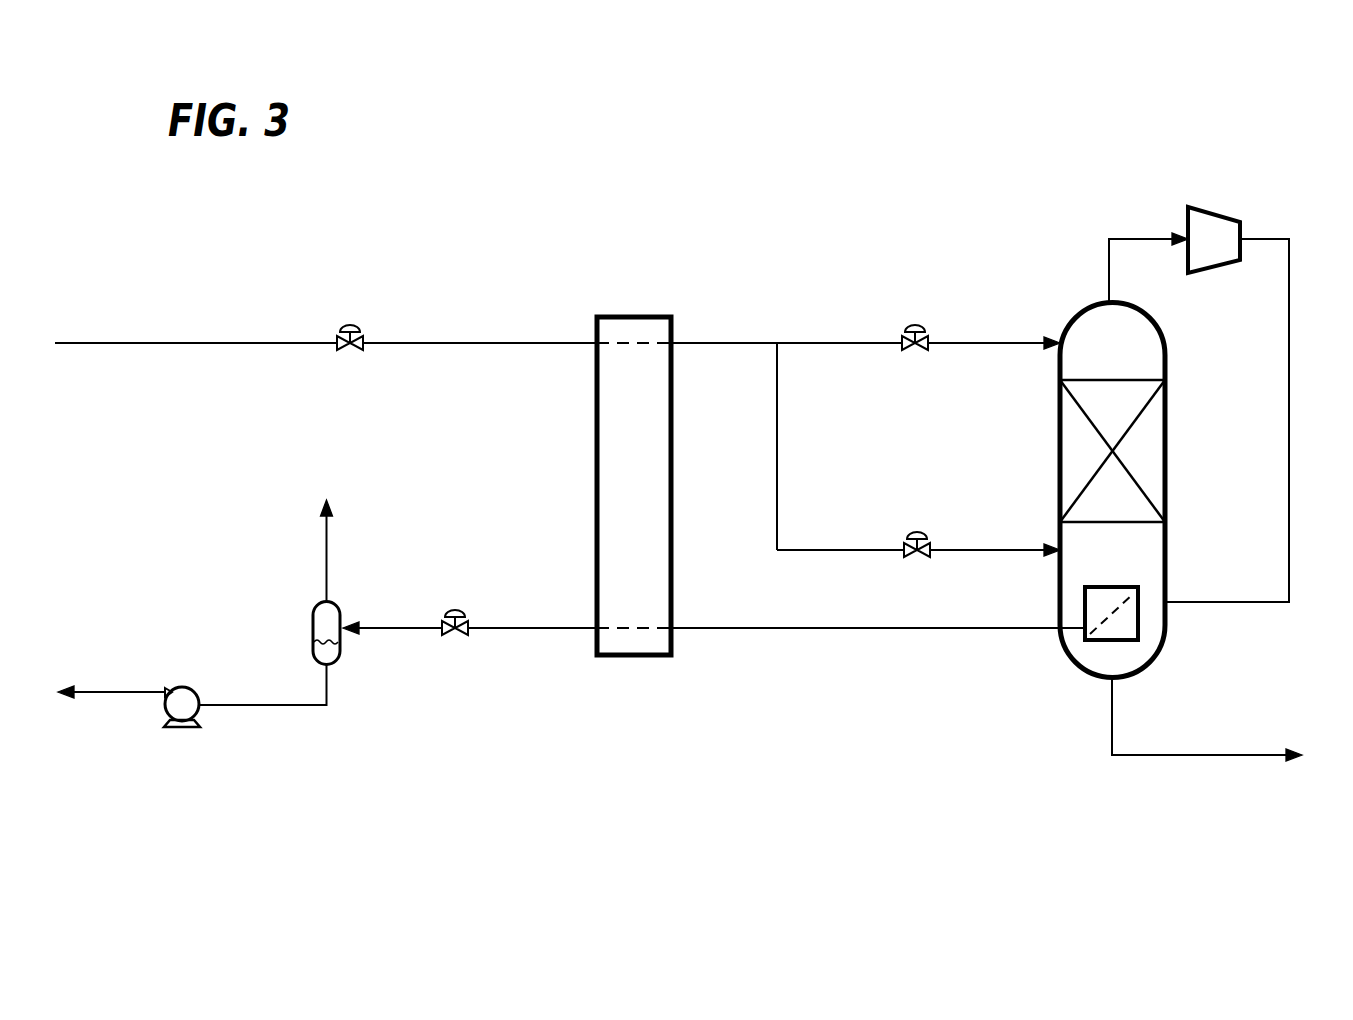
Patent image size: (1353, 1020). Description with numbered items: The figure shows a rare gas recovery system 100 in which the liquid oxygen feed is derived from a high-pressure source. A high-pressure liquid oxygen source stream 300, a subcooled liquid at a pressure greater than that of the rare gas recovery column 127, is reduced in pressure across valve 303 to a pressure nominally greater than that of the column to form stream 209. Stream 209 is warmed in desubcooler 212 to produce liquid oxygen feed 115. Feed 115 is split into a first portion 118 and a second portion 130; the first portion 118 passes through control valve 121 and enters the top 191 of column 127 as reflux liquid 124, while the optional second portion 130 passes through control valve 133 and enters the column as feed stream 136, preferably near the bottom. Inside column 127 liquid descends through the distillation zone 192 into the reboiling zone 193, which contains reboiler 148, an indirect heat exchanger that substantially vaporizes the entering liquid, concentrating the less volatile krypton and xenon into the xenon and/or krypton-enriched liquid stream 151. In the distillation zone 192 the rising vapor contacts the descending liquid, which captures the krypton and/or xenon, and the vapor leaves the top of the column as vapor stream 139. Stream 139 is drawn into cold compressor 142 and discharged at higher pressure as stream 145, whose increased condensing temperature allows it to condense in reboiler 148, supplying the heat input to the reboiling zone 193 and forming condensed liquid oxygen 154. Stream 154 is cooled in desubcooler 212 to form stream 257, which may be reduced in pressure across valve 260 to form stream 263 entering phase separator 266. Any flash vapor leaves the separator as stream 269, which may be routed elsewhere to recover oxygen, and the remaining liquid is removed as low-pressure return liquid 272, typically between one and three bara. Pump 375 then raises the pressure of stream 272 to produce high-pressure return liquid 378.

The rare gas recovery system 100 is at (955, 265).
The high-pressure liquid oxygen source stream 300 is at (195, 343).
The valve 303 is at (350, 325).
The stream 209 is at (522, 343).
The desubcooler 212 is at (596, 470).
The liquid oxygen feed 115 is at (740, 343).
The first portion 118 is at (835, 343).
The control valve 121 is at (915, 326).
The reflux liquid 124 is at (1010, 343).
The rare gas recovery column 127 is at (1100, 510).
The second portion 130 is at (826, 552).
The control valve 133 is at (917, 533).
The feed stream 136 is at (997, 550).
The vapor stream 139 is at (1138, 239).
The cold compressor 142 is at (1224, 216).
The cold compressed oxygen stream 145 is at (1289, 330).
The reboiler 148 is at (1140, 627).
The xenon and/or krypton-enriched liquid stream 151 is at (1112, 733).
The condensed liquid oxygen 154 is at (767, 628).
The top of column 191 is at (1167, 360).
The distillation zone 192 is at (1143, 423).
The reboiling zone 193 is at (1167, 565).
The stream 257 is at (530, 628).
The valve 260 is at (455, 611).
The stream 263 is at (402, 630).
The phase separator 266 is at (314, 640).
The flash vapor stream 269 is at (326, 548).
The low-pressure return liquid 272 is at (280, 705).
The pump 375 is at (183, 688).
The high-pressure return liquid 378 is at (108, 692).